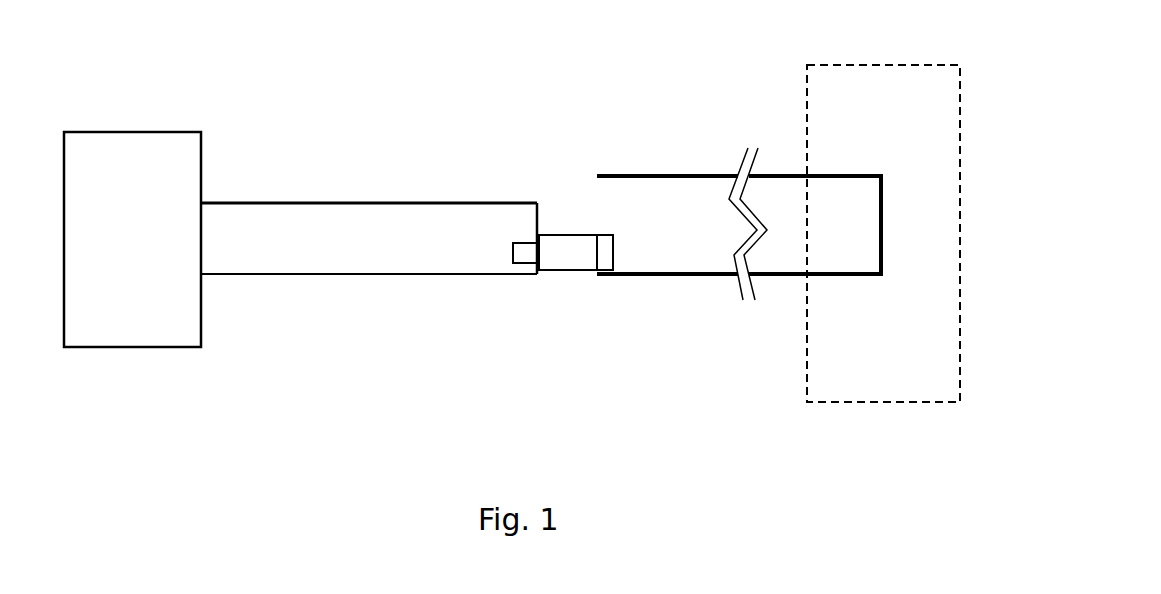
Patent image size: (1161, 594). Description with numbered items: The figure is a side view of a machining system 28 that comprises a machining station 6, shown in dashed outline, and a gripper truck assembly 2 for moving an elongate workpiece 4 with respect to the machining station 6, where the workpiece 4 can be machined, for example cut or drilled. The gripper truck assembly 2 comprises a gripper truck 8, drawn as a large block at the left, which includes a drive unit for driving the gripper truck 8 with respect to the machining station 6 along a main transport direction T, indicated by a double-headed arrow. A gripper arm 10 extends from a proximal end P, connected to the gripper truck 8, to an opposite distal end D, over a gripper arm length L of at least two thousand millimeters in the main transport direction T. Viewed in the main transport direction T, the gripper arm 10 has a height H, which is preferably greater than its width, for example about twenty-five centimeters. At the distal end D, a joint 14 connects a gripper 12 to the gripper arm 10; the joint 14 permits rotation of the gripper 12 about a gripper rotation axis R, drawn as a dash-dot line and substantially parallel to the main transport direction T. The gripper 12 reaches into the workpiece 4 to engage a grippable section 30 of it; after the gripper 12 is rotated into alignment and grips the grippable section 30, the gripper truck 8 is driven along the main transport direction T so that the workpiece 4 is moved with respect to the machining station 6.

The gripper truck assembly 2 is at (371, 106).
The workpiece 4 is at (679, 190).
The machining station 6 is at (822, 82).
The gripper truck 8 is at (179, 148).
The gripper arm 10 is at (345, 217).
The gripper 12 is at (585, 265).
The joint 14 is at (523, 275).
The machining system 28 is at (341, 475).
The grippable section 30 is at (605, 258).
The proximal end P is at (222, 168).
The distal end D is at (528, 159).
The height H is at (406, 206).
The gripper rotation axis R is at (583, 253).
The gripper arm length L is at (536, 392).
The main transport direction T is at (227, 474).